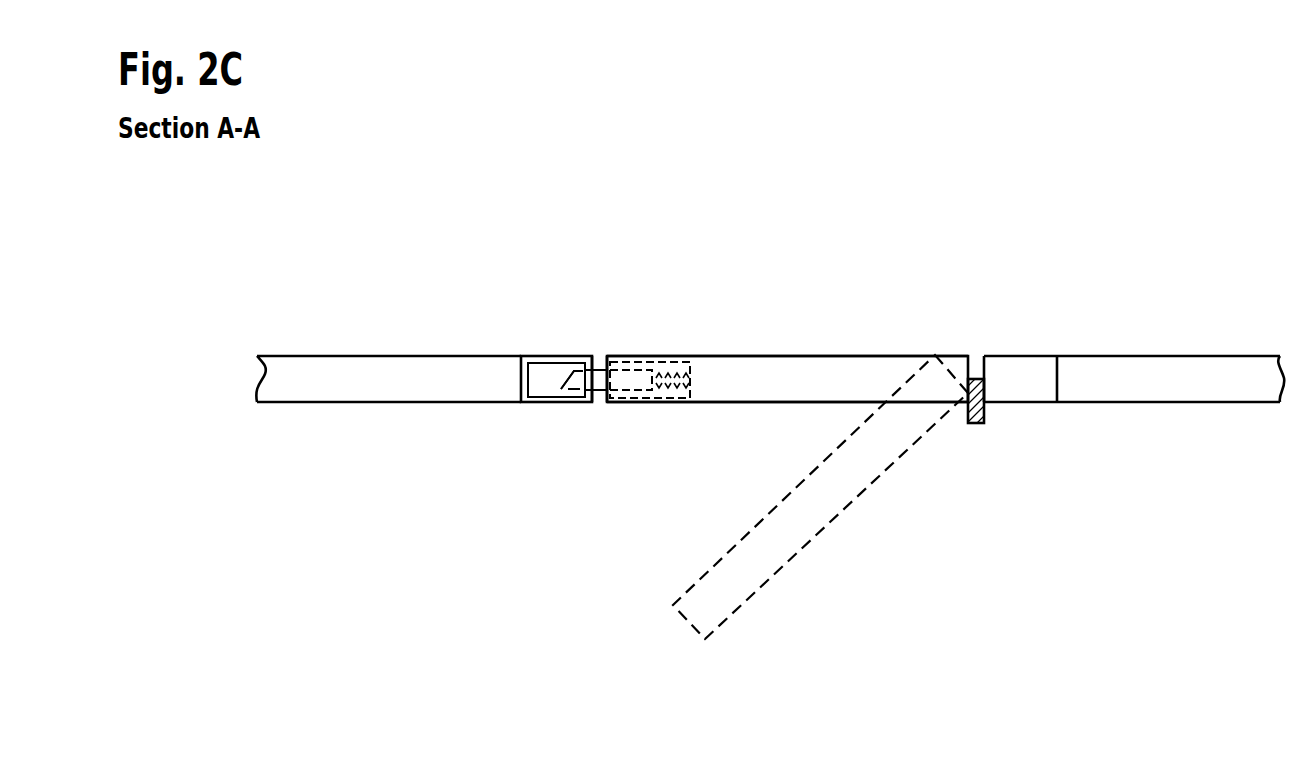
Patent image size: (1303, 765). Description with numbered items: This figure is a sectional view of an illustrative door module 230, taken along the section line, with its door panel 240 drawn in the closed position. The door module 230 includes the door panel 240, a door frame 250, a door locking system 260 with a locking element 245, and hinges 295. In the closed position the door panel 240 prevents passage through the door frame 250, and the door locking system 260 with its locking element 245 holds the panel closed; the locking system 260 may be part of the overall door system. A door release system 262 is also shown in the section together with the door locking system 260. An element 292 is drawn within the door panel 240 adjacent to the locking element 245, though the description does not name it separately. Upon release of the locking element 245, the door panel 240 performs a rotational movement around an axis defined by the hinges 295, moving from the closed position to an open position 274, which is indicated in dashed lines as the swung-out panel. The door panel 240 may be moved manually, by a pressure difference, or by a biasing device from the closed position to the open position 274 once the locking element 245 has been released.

The door module 230 is at (906, 349).
The door panel 240 is at (853, 355).
The locking element 245 is at (600, 348).
The door frame 250 is at (540, 355).
The door locking system 260 is at (600, 407).
The door release system 262 is at (572, 407).
The open position 274 is at (823, 527).
The spring element 292 is at (740, 355).
The hinges 295 is at (973, 378).